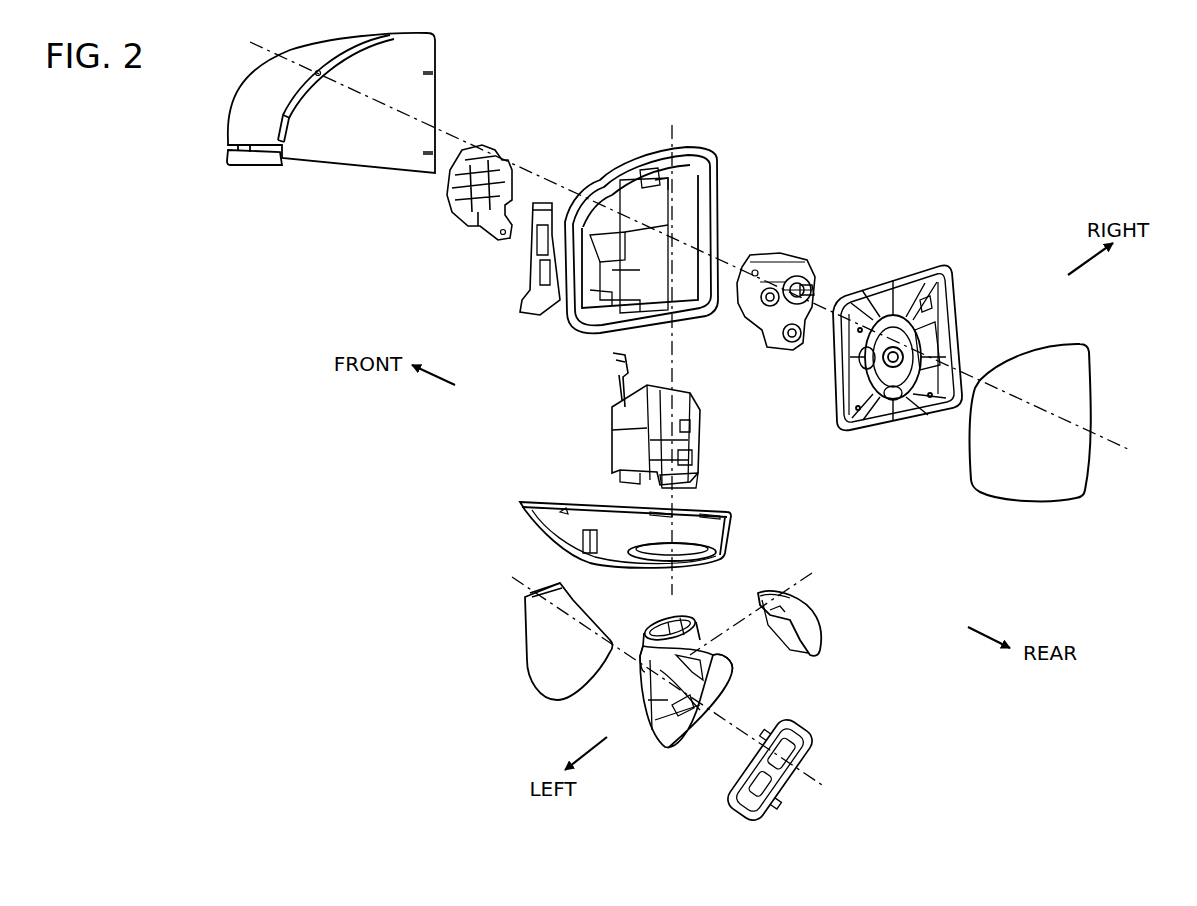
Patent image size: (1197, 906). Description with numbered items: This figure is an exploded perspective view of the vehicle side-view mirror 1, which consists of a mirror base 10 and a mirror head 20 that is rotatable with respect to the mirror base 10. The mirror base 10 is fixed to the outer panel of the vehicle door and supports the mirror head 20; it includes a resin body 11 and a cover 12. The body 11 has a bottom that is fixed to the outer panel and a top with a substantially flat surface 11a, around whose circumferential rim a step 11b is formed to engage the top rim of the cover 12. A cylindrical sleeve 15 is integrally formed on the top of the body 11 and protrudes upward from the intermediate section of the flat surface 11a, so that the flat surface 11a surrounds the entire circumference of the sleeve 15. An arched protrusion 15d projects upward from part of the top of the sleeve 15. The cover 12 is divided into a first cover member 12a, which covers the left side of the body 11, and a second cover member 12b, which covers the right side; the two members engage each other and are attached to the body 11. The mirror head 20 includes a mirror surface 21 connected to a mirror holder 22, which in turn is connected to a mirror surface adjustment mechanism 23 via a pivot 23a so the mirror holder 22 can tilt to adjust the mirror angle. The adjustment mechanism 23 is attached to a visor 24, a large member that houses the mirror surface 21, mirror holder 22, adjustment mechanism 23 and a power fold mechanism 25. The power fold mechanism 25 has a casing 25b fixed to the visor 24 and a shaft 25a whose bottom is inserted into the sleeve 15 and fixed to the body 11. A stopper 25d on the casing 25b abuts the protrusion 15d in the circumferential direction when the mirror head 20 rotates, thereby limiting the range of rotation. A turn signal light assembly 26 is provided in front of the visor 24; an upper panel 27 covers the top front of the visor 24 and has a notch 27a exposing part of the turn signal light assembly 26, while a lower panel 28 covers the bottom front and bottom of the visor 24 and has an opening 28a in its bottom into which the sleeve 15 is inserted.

The vehicle side-view mirror 1 is at (848, 152).
The mirror base 10 is at (540, 725).
The body 11 is at (677, 681).
The flat surface 11a is at (705, 640).
The step 11b is at (650, 640).
The cover 12 is at (830, 613).
The first cover member 12a is at (537, 640).
The second cover member 12b is at (810, 630).
The sleeve 15 is at (693, 605).
The protrusion 15d is at (690, 612).
The mirror head 20 is at (742, 213).
The mirror surface 21 is at (1093, 383).
The mirror holder 22 is at (962, 298).
The mirror surface adjustment mechanism 23 is at (805, 272).
The pivot 23a is at (816, 290).
The visor 24 is at (712, 148).
The power fold mechanism 25 is at (703, 429).
The shaft 25a is at (693, 478).
The casing 25b is at (697, 430).
The stopper 25d is at (690, 455).
The turn signal light assembly 26 is at (483, 150).
The upper panel 27 is at (440, 50).
The notch 27a is at (256, 150).
The lower panel 28 is at (627, 535).
The opening 28a is at (725, 537).